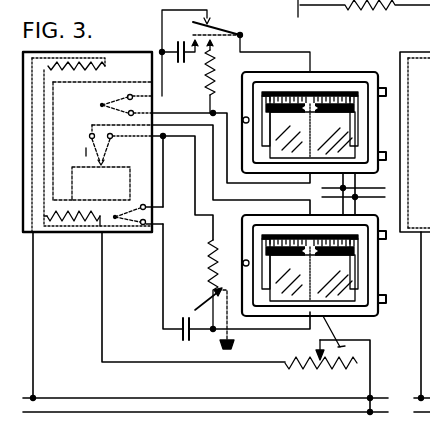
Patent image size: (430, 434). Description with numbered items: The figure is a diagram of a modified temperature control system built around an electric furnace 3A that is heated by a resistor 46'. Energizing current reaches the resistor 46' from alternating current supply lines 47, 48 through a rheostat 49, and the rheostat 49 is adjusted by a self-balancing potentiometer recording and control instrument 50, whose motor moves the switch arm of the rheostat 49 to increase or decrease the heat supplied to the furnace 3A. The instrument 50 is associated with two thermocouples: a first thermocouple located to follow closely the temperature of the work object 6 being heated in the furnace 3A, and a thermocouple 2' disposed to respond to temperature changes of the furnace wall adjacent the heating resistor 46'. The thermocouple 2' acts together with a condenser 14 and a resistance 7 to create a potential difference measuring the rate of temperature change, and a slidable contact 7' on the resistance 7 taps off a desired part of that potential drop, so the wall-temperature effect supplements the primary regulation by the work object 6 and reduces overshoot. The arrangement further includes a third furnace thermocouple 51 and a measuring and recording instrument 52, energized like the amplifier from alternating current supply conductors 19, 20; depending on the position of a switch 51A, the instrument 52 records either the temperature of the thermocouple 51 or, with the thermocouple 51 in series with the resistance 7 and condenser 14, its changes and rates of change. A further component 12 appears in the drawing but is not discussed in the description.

The electric furnace 3A is at (136, 62).
The heating resistor 46' is at (87, 155).
The thermocouple 2' is at (137, 232).
The thermocouple 51 is at (108, 98).
The switch 51A is at (215, 26).
The work object 6 is at (102, 162).
The condenser 14 is at (183, 70).
The resistance 7 is at (210, 184).
The contact 7' is at (206, 318).
The resistor 12 is at (360, 9).
The measuring and recording instrument 52 is at (352, 60).
The self-balancing potentiometer recording and control instrument 50 is at (348, 316).
The alternating current supply conductor 19 is at (378, 188).
The alternating current supply conductor 20 is at (378, 199).
The rheostat 49 is at (333, 368).
The alternating current supply line 47 is at (126, 397).
The alternating current supply line 48 is at (128, 412).